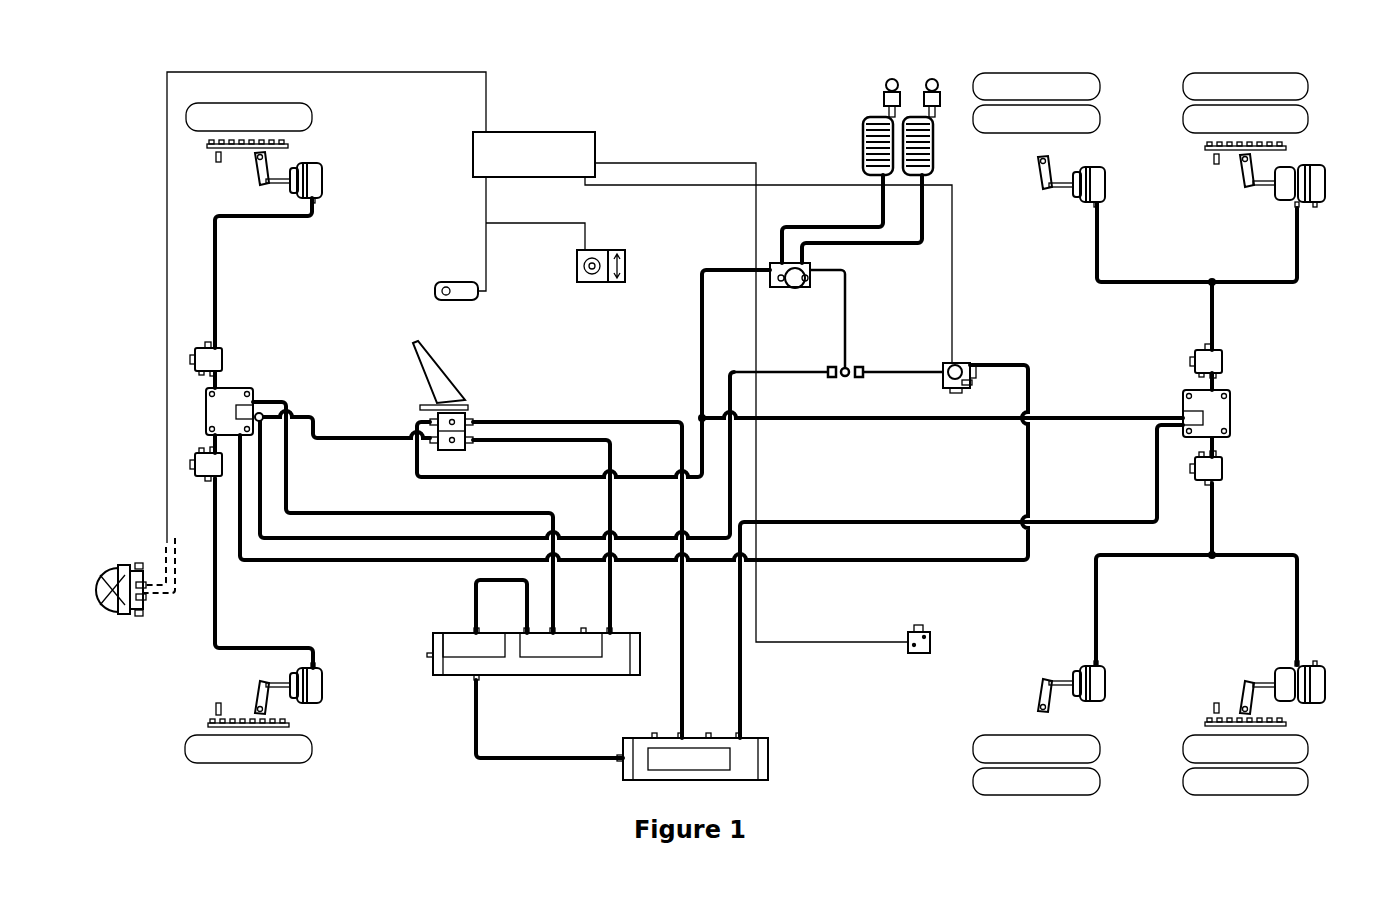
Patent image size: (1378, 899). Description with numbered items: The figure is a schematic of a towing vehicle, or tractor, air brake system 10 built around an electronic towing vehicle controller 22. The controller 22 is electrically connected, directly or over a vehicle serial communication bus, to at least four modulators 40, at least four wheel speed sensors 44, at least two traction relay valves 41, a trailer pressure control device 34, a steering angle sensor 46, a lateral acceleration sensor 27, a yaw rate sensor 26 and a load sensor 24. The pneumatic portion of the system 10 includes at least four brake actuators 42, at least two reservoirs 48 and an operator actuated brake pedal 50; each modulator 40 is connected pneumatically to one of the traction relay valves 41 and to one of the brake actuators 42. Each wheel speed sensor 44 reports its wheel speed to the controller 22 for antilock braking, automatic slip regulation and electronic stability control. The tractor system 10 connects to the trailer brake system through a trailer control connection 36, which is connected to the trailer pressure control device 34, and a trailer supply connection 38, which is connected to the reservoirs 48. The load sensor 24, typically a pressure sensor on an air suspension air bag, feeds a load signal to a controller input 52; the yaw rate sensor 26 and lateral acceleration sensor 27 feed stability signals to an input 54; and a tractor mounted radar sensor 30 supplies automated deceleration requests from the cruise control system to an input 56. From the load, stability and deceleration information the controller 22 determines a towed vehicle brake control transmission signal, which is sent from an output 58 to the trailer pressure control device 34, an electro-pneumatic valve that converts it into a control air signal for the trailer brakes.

The tractor air brake system 10 is at (716, 70).
The electronic towing vehicle controller 22 is at (561, 132).
The load sensor 24 is at (913, 655).
The yaw rate sensor 26 is at (592, 282).
The lateral acceleration sensor 27 is at (617, 282).
The radar sensor 30 is at (110, 565).
The trailer pressure control device 34 is at (958, 363).
The trailer control connection 36 is at (932, 79).
The trailer supply connection 38 is at (892, 79).
The modulator 40 is at (223, 360).
The traction relay valve 41 is at (242, 388).
The brake actuator 42 is at (320, 163).
The wheel speed sensor 44 is at (217, 163).
The steering angle sensor 46 is at (432, 292).
The reservoir 48 is at (640, 632).
The brake pedal 50 is at (440, 372).
The controller input 52 is at (598, 158).
The input 54 is at (486, 180).
The input 56 is at (486, 128).
The output 58 is at (585, 178).